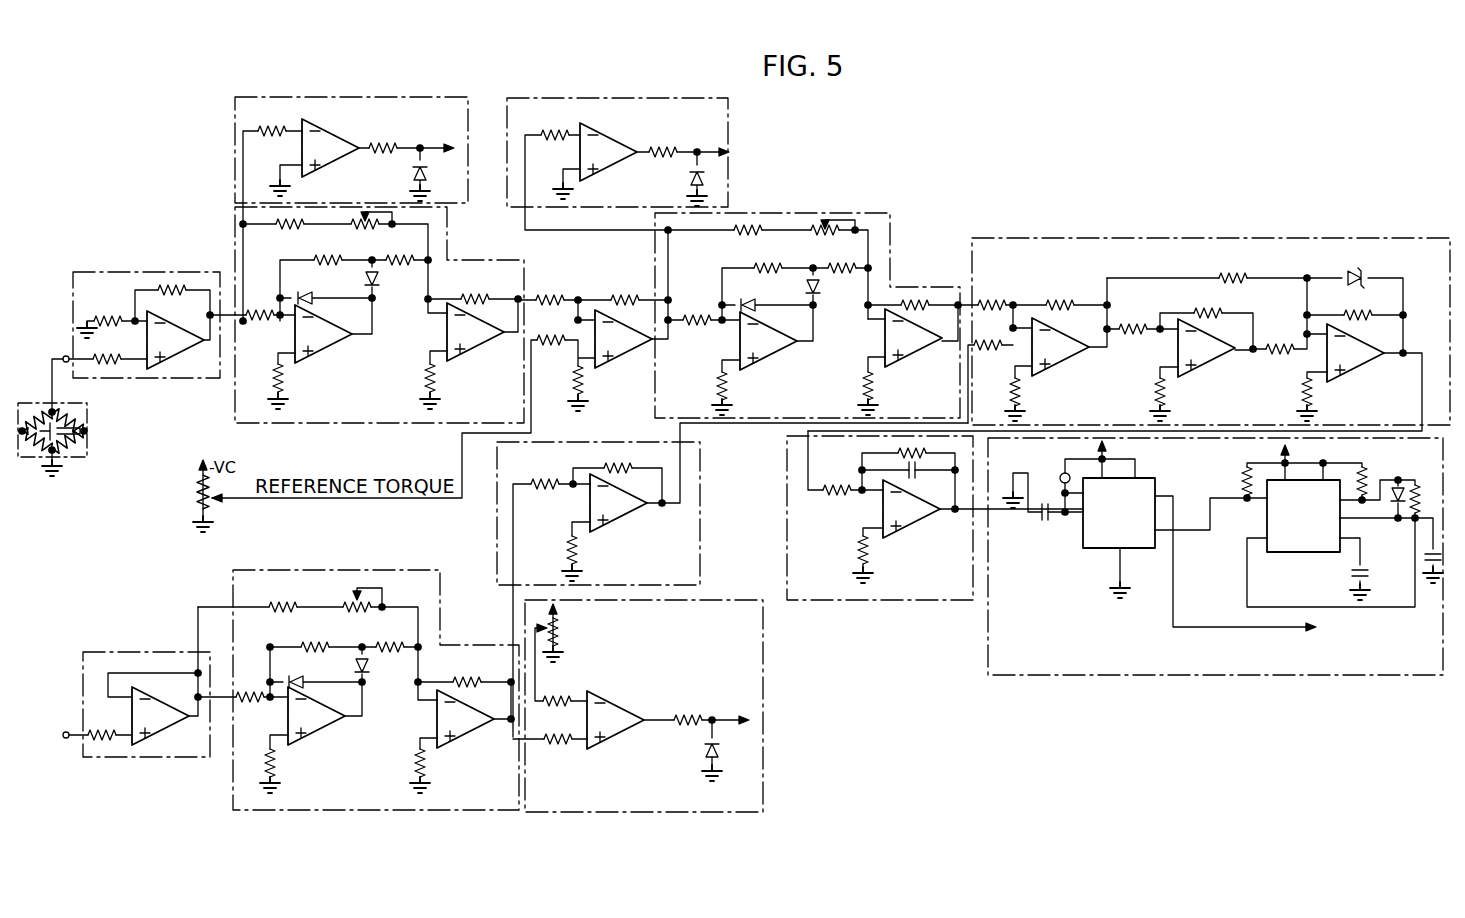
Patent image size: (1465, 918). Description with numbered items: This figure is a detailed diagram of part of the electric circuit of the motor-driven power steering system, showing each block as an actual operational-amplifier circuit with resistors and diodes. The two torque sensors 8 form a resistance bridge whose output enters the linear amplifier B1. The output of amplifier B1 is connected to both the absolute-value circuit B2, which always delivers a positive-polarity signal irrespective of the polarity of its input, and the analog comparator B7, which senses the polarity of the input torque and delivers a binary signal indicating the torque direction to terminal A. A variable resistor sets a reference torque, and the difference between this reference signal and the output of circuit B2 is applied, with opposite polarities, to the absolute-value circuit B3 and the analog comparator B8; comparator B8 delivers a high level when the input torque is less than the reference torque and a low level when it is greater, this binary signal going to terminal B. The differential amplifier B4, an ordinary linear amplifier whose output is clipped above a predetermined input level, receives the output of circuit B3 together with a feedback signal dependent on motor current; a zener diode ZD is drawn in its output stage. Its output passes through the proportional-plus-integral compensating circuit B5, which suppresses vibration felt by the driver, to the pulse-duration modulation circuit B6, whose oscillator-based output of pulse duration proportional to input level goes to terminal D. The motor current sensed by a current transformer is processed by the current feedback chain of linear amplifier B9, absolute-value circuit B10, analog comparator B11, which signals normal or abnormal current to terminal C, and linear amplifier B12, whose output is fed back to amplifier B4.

The torque sensors 8 is at (36, 406).
The linear amplifier B1 is at (147, 331).
The absolute-value circuit B2 is at (379, 315).
The absolute-value circuit B3 is at (808, 315).
The differential amplifier B4 is at (1129, 321).
The PI compensating circuit B5 is at (935, 527).
The pulse-duration modulation circuit B6 is at (1215, 569).
The analog comparator B7 is at (351, 195).
The analog comparator B8 is at (687, 192).
The linear amplifier B9 is at (143, 682).
The absolute-value circuit B10 is at (358, 677).
The analog comparator B11 is at (657, 706).
The linear amplifier B12 is at (732, 577).
The zener diode ZD is at (1363, 276).